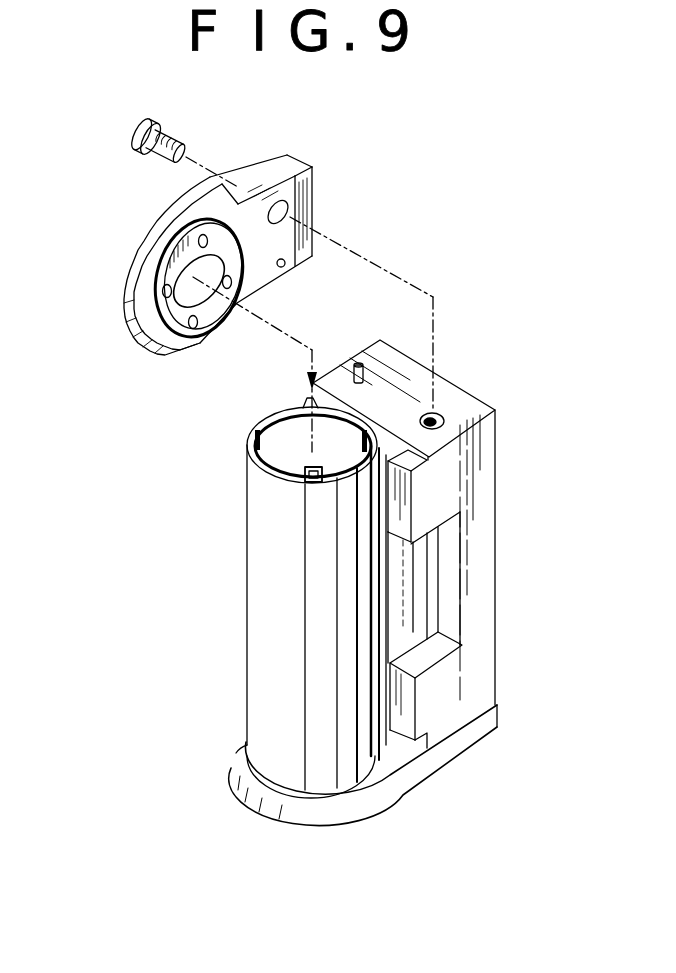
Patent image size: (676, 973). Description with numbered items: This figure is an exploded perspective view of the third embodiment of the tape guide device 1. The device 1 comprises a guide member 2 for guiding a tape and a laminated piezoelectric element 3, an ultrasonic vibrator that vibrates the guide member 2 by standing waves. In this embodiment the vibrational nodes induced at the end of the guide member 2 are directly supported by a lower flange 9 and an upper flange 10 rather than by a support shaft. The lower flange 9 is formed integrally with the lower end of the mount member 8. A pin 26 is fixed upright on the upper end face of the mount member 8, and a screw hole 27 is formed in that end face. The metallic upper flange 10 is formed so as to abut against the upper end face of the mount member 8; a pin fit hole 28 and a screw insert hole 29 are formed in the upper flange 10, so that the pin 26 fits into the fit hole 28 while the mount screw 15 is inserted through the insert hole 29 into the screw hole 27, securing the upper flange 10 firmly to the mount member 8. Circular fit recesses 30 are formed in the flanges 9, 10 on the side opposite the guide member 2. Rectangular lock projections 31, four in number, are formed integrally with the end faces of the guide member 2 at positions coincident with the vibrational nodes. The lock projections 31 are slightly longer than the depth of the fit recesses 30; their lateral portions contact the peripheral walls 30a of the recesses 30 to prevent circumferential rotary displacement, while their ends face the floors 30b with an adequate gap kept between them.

The tape guide device 1 is at (184, 561).
The guide member 2 is at (264, 671).
The laminated piezoelectric element 3 is at (420, 595).
The mount member 8 is at (447, 473).
The lower flange 9 is at (347, 816).
The upper flange 10 is at (271, 152).
The mount screw 15 is at (133, 130).
The pin 26 is at (358, 362).
The screw hole 27 is at (444, 417).
The pin fit hole 28 is at (287, 266).
The screw insert hole 29 is at (290, 206).
The fit recess 30 is at (165, 328).
The peripheral wall 30a is at (196, 330).
The floor 30b is at (160, 270).
The lock projection 31 is at (304, 480).